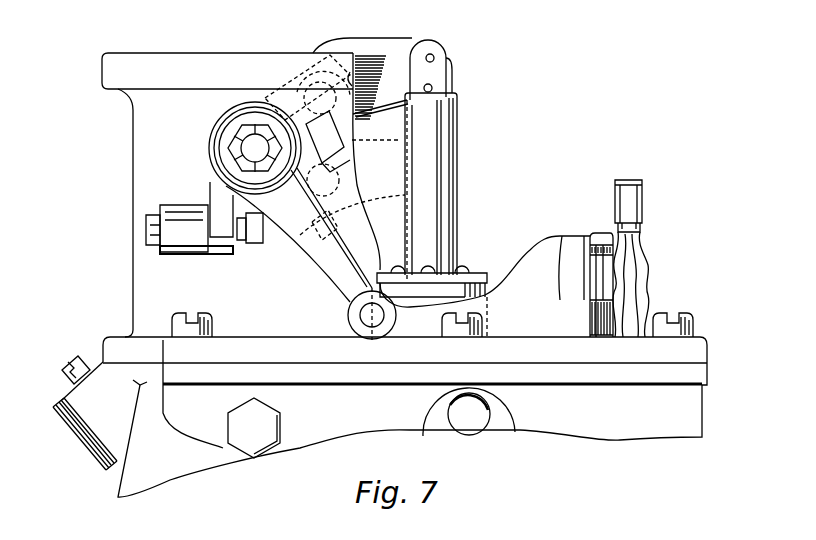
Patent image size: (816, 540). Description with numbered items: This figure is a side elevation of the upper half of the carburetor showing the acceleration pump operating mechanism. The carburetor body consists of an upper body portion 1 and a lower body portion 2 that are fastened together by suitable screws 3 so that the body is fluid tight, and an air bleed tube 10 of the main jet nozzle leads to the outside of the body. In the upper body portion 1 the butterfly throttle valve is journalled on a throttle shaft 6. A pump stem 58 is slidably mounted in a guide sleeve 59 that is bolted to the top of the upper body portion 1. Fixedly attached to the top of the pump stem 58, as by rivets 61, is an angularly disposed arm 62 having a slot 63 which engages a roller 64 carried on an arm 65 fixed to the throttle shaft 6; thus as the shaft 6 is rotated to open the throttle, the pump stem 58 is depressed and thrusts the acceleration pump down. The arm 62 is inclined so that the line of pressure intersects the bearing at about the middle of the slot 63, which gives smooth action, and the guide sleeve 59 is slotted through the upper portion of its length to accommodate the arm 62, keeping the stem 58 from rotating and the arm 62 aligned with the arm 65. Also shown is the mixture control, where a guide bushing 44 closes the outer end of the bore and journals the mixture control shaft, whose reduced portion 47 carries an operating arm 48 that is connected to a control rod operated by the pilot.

The upper body portion 1 is at (150, 267).
The lower body portion 2 is at (147, 468).
The screws 3 is at (187, 325).
The throttle shaft 6 is at (250, 147).
The air bleed tube 10 is at (67, 382).
The guide bushing 44 is at (602, 245).
The reduced portion 47 is at (648, 277).
The operating arm 48 is at (637, 183).
The pump stem 58 is at (432, 87).
The guide sleeve 59 is at (440, 145).
The rivets 61 is at (433, 57).
The angularly disposed arm 62 is at (386, 58).
The slot 63 is at (357, 78).
The roller 64 is at (320, 96).
The arm 65 is at (268, 96).